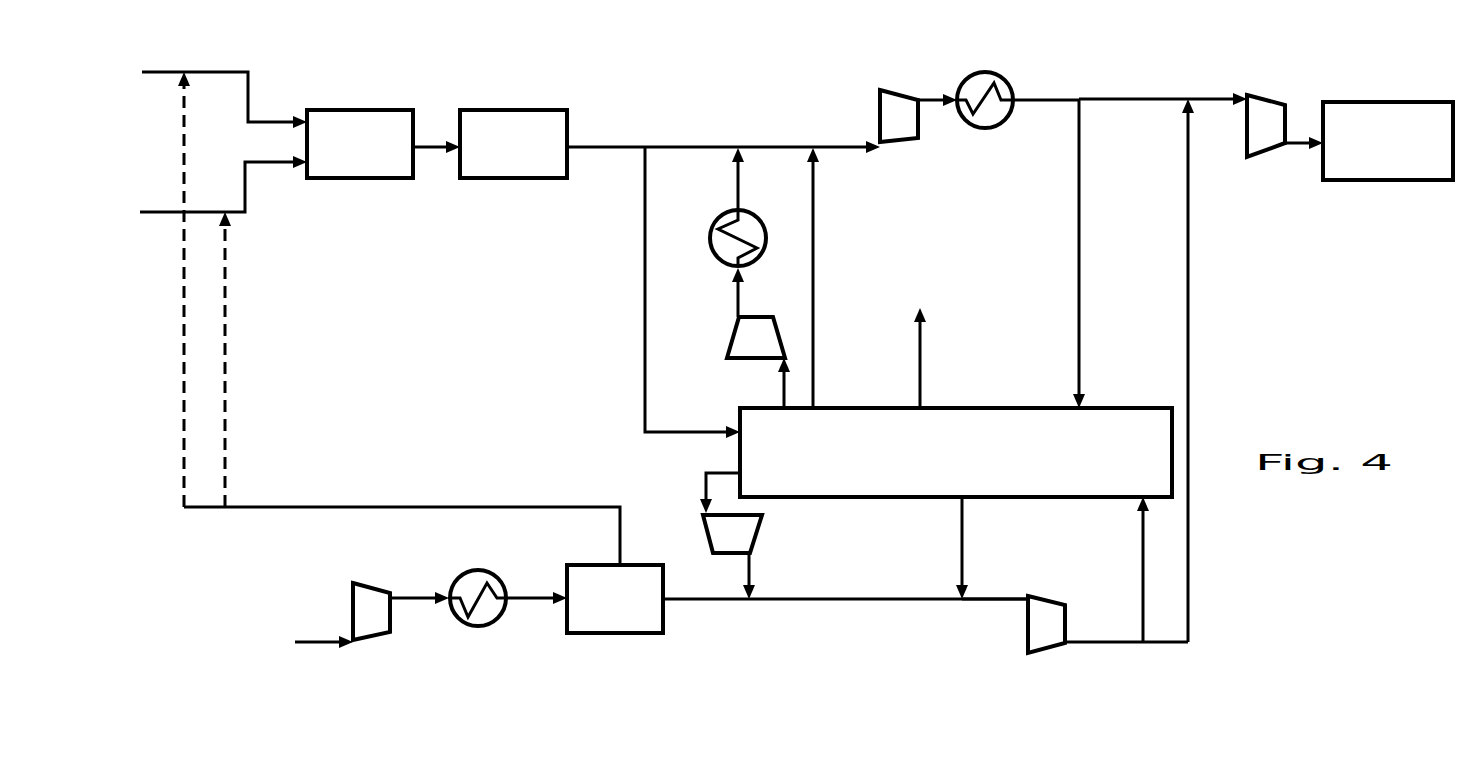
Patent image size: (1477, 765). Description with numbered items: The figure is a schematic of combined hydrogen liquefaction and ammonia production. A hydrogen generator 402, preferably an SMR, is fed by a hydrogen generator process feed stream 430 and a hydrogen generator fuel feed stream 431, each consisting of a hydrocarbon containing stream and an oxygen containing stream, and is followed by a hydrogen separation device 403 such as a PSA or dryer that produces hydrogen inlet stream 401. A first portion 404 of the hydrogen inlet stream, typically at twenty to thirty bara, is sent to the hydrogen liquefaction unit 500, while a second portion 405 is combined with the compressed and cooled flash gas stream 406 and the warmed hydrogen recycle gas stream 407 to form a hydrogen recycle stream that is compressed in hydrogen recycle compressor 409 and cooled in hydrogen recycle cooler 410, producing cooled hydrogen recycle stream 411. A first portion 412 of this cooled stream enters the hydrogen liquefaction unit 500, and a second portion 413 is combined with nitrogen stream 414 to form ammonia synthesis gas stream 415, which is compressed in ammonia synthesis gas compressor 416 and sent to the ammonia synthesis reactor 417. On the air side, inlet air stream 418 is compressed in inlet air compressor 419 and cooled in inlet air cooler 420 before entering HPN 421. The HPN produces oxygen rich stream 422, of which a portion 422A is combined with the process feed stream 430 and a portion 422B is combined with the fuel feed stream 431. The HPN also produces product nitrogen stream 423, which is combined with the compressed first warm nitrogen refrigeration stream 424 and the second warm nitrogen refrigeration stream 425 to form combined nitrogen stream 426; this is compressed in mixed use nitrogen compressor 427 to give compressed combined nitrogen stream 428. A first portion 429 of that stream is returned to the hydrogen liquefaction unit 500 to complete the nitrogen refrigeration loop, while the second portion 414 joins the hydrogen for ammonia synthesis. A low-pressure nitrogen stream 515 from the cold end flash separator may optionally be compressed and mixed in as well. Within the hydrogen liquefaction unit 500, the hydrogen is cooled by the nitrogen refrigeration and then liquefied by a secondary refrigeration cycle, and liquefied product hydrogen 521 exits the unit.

The hydrogen inlet stream 401 is at (606, 129).
The hydrogen generator 402 is at (360, 144).
The hydrogen separation device 403 is at (490, 144).
The first portion of hydrogen inlet stream 404 is at (667, 292).
The second portion of hydrogen inlet stream 405 is at (762, 132).
The compressed and cooled flash gas stream 406 is at (728, 232).
The warmed hydrogen recycle gas stream 407 is at (837, 278).
The hydrogen recycle compressor 409 is at (872, 116).
The hydrogen recycle cooler 410 is at (965, 115).
The cooled hydrogen recycle stream 411 is at (1046, 82).
The first portion of cooled hydrogen recycle stream 412 is at (1052, 253).
The second portion of cooled hydrogen recycle stream 413 is at (1133, 117).
The second portion of compressed combined nitrogen stream 414 is at (1210, 370).
The ammonia synthesis gas stream 415 is at (1217, 84).
The ammonia synthesis gas compressor 416 is at (1264, 143).
The ammonia synthesis reactor 417 is at (1369, 141).
The inlet air stream 418 is at (297, 643).
The inlet air compressor 419 is at (399, 598).
The inlet air cooler 420 is at (508, 615).
The HPN 421 is at (615, 599).
The oxygen rich stream 422 is at (402, 519).
The oxygen rich stream to hydrogen generator process feed stream 422A is at (153, 289).
The oxygen rich stream to hydrogen generator fuel feed stream 422B is at (259, 359).
The product nitrogen stream 423 is at (731, 616).
The compressed first warm nitrogen refrigeration stream 424 is at (771, 576).
The second warm nitrogen refrigeration stream 425 is at (941, 548).
The combined nitrogen stream 426 is at (995, 583).
The mixed use nitrogen compressor 427 is at (1045, 643).
The compressed combined nitrogen stream 428 is at (1126, 626).
The first portion of compressed combined nitrogen stream 429 is at (1122, 569).
The hydrogen generator process feed stream 430 is at (556, 347).
The hydrogen generator fuel feed stream 431 is at (194, 189).
The hydrogen liquefaction unit 500 is at (956, 452).
The low-pressure nitrogen stream 515 is at (709, 508).
The liquefied product hydrogen 521 is at (920, 343).